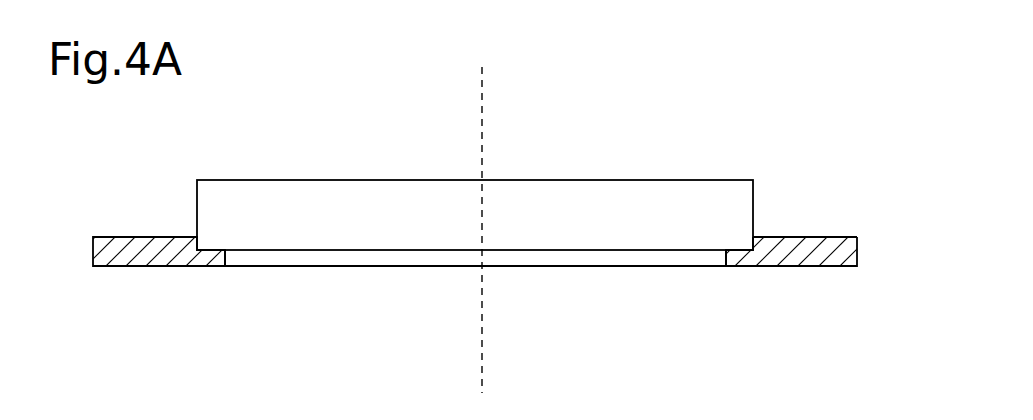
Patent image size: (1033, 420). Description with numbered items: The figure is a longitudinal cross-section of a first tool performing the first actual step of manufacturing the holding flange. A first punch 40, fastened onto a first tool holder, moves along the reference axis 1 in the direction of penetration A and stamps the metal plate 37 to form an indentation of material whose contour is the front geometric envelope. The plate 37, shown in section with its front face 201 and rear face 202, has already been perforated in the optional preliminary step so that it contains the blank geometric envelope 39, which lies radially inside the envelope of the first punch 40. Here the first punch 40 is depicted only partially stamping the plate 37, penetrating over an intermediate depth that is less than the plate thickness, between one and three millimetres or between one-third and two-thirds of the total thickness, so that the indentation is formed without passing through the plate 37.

The reference axis 1 is at (482, 120).
The first punch 40 is at (708, 205).
The blank geometric envelope 39 is at (345, 257).
The metal plate 37 is at (833, 241).
The front face 201 is at (800, 237).
The rear face 202 is at (800, 257).
The direction of penetration A is at (612, 158).